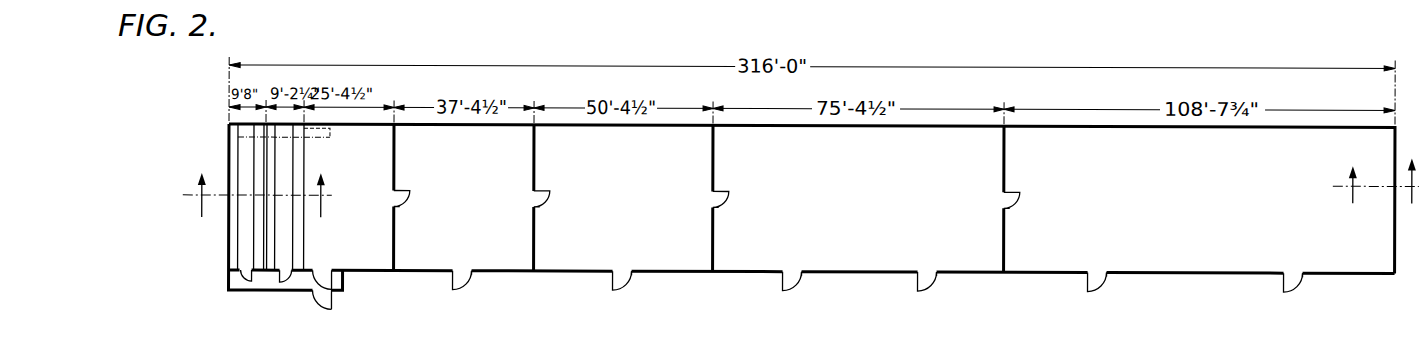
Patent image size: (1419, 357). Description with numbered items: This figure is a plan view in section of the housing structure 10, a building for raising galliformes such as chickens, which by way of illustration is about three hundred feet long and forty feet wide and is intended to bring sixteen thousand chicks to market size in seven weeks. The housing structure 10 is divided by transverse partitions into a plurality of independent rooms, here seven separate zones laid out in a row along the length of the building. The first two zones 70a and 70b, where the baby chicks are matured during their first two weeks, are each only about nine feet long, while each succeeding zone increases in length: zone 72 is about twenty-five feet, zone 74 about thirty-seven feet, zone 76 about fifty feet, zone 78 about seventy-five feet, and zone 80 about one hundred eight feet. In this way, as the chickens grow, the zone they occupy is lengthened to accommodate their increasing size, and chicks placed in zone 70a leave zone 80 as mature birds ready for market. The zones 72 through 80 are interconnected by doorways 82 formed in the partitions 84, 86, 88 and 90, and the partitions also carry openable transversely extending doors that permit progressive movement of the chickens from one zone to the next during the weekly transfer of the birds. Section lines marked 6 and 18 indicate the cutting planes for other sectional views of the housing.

The housing structure 10 is at (518, 286).
The section line 6- 6 is at (1374, 167).
The section line 18- 18 is at (263, 192).
The first zone 70a is at (248, 240).
The second zone 70b is at (285, 270).
The zone 72 is at (368, 227).
The zone 74 is at (487, 205).
The zone 76 is at (642, 205).
The zone 78 is at (853, 218).
The zone 80 is at (1143, 212).
The doorway 82 is at (410, 190).
The partition 84 is at (395, 250).
The partition 86 is at (535, 250).
The partition 88 is at (714, 246).
The partition 90 is at (1005, 243).